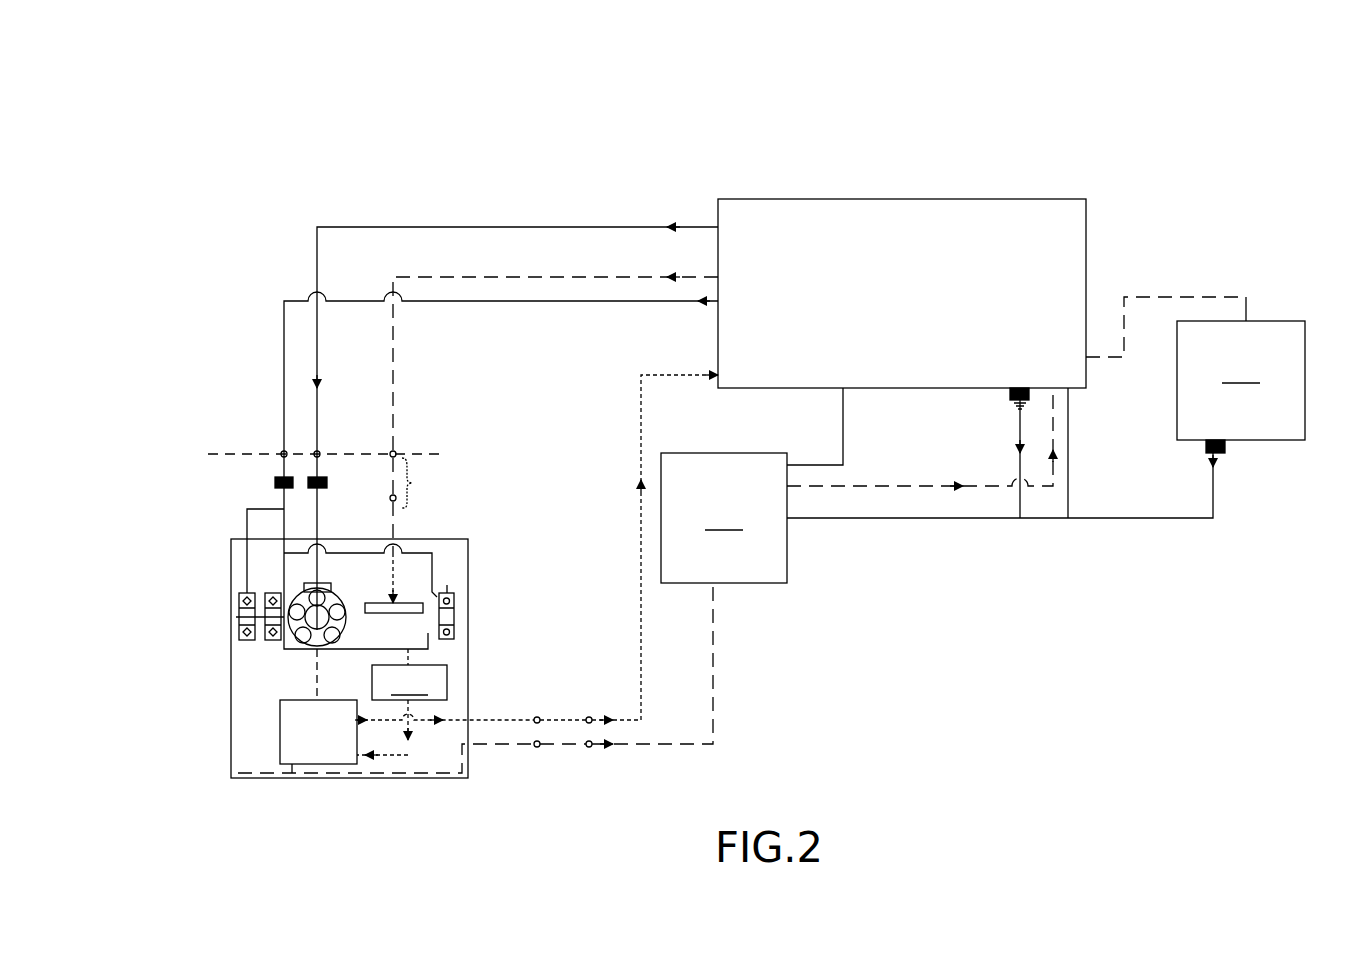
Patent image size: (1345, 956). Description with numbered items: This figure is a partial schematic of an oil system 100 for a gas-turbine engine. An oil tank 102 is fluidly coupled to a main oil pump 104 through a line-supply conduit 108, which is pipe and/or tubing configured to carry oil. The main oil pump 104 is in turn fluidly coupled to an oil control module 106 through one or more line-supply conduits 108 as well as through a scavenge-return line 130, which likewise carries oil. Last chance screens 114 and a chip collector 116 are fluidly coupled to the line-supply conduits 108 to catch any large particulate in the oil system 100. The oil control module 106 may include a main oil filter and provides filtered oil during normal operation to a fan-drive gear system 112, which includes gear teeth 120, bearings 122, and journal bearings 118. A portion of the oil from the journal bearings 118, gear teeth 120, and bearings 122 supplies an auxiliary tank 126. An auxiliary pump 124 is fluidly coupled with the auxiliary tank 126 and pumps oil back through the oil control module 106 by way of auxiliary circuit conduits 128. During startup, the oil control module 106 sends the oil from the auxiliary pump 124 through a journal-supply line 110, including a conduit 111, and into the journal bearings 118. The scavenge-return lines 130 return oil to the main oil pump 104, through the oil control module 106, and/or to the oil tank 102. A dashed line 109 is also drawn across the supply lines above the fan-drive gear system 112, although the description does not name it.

The oil system 100 is at (1179, 173).
The oil tank 102 is at (1241, 380).
The main oil pump 104 is at (724, 518).
The oil control module 106 is at (965, 199).
The line-supply conduit 108 is at (530, 227).
The disconnect plane 109 is at (232, 454).
The journal-supply line 110 is at (393, 419).
The conduit 111 is at (412, 483).
The fan-drive gear system 112 is at (468, 539).
The last chance screens 114 is at (275, 483).
The chip collector 116 is at (1016, 408).
The journal bearings 118 is at (420, 603).
The gear teeth 120 is at (303, 645).
The bearings 122 is at (239, 600).
The auxiliary pump 124 is at (278, 745).
The auxiliary tank 126 is at (402, 702).
The auxiliary circuit conduits 128 is at (552, 715).
The scavenge-return line 130 is at (1185, 297).